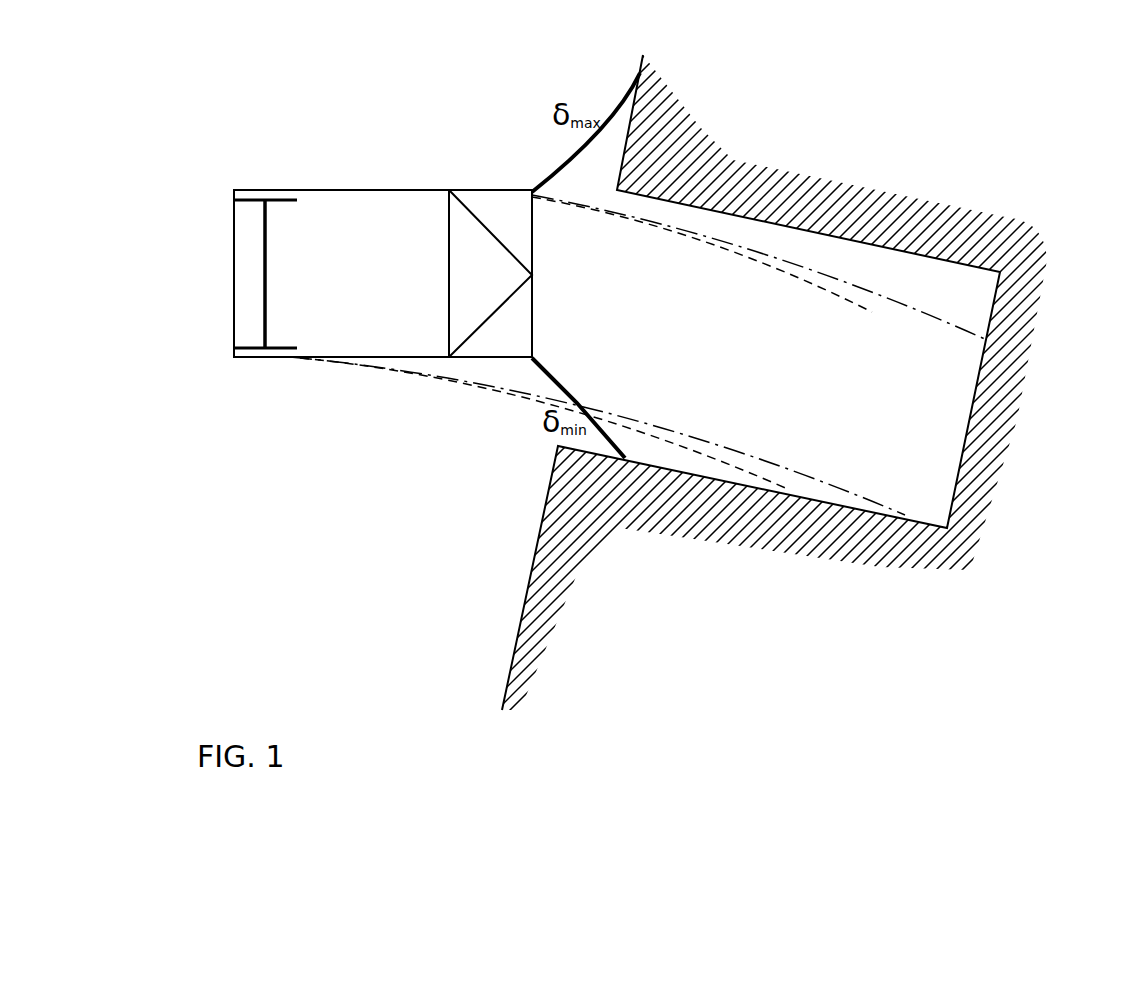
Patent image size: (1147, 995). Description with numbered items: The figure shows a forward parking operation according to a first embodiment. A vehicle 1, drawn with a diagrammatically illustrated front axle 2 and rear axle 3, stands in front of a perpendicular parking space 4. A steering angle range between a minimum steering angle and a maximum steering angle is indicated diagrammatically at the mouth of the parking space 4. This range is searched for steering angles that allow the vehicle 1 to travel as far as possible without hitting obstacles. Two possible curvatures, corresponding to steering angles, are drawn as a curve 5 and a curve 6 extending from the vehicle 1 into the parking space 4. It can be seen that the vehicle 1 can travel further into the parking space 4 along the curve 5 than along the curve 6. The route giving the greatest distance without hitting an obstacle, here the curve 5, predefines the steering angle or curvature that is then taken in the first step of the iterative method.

The vehicle 1 is at (355, 191).
The front axle 2 is at (458, 215).
The rear axle 3 is at (251, 200).
The parking space 4 is at (1013, 209).
The curve 5 is at (955, 328).
The curve 6 is at (838, 293).